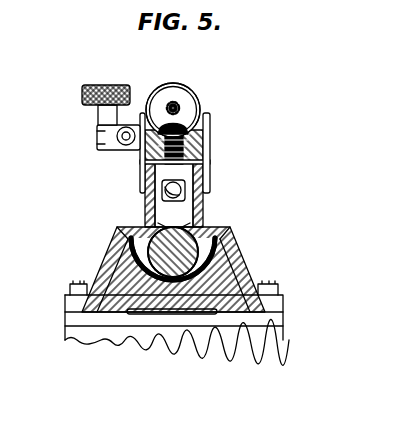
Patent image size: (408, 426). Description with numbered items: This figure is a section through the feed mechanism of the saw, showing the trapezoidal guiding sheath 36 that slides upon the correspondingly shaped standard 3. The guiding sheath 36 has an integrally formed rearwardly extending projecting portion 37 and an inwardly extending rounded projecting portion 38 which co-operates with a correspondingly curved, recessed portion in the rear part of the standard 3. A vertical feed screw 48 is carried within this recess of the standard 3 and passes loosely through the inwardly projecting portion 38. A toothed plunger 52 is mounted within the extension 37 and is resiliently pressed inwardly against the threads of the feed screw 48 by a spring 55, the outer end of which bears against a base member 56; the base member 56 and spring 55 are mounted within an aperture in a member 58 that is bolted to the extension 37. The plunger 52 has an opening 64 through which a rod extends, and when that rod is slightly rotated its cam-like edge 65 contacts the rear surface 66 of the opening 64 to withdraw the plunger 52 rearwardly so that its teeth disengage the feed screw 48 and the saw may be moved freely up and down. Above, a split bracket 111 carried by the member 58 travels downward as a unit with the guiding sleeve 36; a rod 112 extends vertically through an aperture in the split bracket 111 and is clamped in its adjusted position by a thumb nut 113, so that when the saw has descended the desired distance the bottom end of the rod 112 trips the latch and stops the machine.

The standard 3 is at (244, 270).
The trapezoidal guiding sheath 36 is at (244, 266).
The rearwardly extending projecting portion 37 is at (206, 202).
The inwardly extending rounded projecting portion 38 is at (110, 254).
The vertical feed screw 48 is at (116, 233).
The plunger 52 is at (150, 212).
The spring 55 is at (148, 163).
The base member 56 is at (208, 125).
The member 58 is at (140, 153).
The opening 64 is at (206, 178).
The cam-like edge 65 is at (145, 199).
The rear surface 66 is at (208, 158).
The split bracket 111 is at (130, 123).
The rod 112 is at (110, 143).
The thumb nut 113 is at (110, 85).